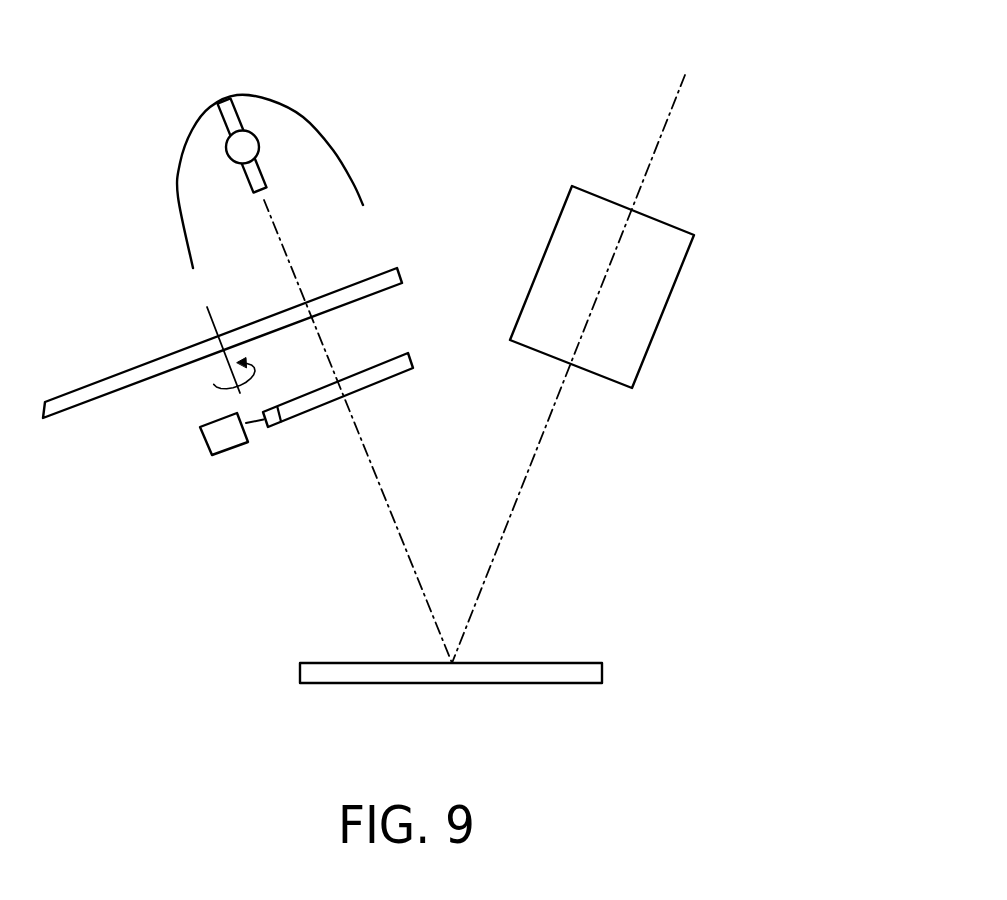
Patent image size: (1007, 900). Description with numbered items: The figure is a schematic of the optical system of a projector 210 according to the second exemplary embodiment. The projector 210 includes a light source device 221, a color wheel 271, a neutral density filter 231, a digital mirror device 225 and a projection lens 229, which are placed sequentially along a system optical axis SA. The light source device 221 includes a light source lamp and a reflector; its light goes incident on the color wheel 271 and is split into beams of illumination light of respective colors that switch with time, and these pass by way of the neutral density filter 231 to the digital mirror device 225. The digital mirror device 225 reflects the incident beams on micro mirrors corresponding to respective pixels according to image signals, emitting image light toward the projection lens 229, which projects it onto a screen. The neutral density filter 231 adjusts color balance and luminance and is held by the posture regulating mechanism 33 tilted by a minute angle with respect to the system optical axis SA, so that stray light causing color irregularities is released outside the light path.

The projector 210 is at (831, 46).
The light source device 221 is at (318, 130).
The color wheel 271 is at (393, 268).
The neutral density filter 231 is at (278, 418).
The posture regulating mechanism 33 is at (215, 435).
The projection lens 229 is at (652, 310).
The system optical axis SA is at (513, 510).
The digital mirror device 225 is at (597, 670).